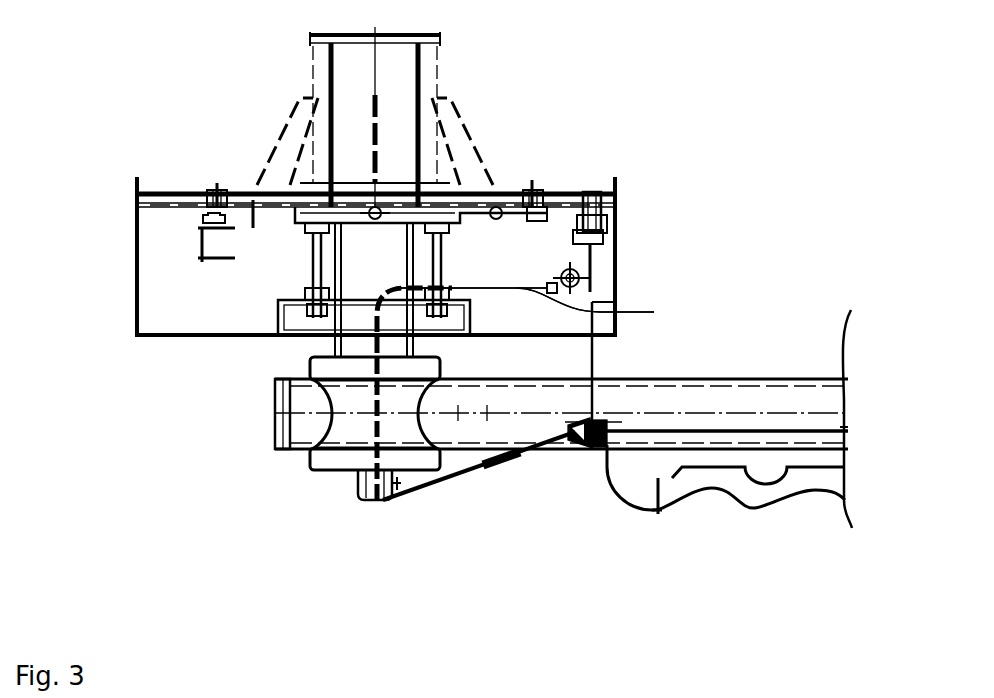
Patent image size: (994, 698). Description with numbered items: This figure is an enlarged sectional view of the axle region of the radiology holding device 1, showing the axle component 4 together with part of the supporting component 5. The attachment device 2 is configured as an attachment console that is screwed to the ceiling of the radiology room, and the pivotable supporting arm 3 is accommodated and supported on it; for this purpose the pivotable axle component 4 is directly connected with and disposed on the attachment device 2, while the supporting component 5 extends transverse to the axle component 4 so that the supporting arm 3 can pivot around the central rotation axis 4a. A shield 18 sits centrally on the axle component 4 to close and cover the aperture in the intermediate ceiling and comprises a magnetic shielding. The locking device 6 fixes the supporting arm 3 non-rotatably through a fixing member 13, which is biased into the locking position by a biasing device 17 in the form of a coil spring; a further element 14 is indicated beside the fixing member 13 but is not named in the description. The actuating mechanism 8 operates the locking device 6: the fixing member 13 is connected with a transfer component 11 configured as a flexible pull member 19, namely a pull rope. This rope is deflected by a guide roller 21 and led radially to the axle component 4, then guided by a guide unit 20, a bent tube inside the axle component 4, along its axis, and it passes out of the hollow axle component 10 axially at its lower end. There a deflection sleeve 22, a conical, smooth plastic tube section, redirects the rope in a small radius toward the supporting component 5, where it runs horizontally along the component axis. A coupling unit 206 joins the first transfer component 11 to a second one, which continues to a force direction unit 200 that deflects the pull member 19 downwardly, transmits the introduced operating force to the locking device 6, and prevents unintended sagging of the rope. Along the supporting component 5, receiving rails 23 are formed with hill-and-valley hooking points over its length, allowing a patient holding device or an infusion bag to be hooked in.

The radiology holding device 1 is at (120, 36).
The attachment device 2 is at (156, 137).
The supporting arm 3 is at (817, 225).
The axle component 4 is at (335, 350).
The central rotation axis 4a is at (367, 74).
The supporting component 5 is at (780, 393).
The locking device 6 is at (690, 168).
The actuating mechanism 8 is at (640, 340).
The axle component 10 is at (345, 423).
The transfer component 11 is at (332, 542).
The fixing member 13 is at (597, 185).
The bearing block 14 is at (581, 185).
The biasing device 17 is at (603, 241).
The shield 18 is at (135, 336).
The flexible pull member 19 is at (332, 542).
The guide unit 20 is at (102, 209).
The guide roller 21 is at (593, 280).
The deflection sleeve 22 is at (371, 290).
The receiving rail 23 is at (712, 480).
The force direction unit 200 is at (616, 466).
The coupling unit 206 is at (498, 475).